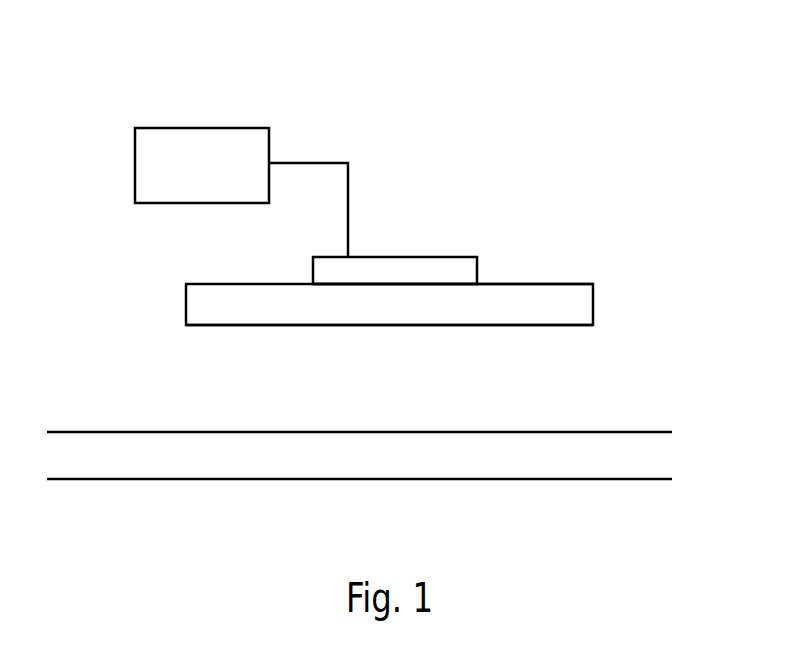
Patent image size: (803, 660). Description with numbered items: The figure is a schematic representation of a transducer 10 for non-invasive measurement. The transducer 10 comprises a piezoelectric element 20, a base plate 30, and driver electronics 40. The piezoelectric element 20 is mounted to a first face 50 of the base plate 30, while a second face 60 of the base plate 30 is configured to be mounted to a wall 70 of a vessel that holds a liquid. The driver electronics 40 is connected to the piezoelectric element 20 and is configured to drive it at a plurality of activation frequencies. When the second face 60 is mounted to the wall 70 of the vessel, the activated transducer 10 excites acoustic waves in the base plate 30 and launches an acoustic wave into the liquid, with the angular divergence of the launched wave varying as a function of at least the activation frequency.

The transducer 10 is at (590, 103).
The piezoelectric element 20 is at (430, 257).
The base plate 30 is at (198, 301).
The driver electronics 40 is at (197, 128).
The first face of the base plate 50 is at (563, 284).
The second face of the base plate 60 is at (563, 325).
The wall of a vessel 70 is at (210, 455).